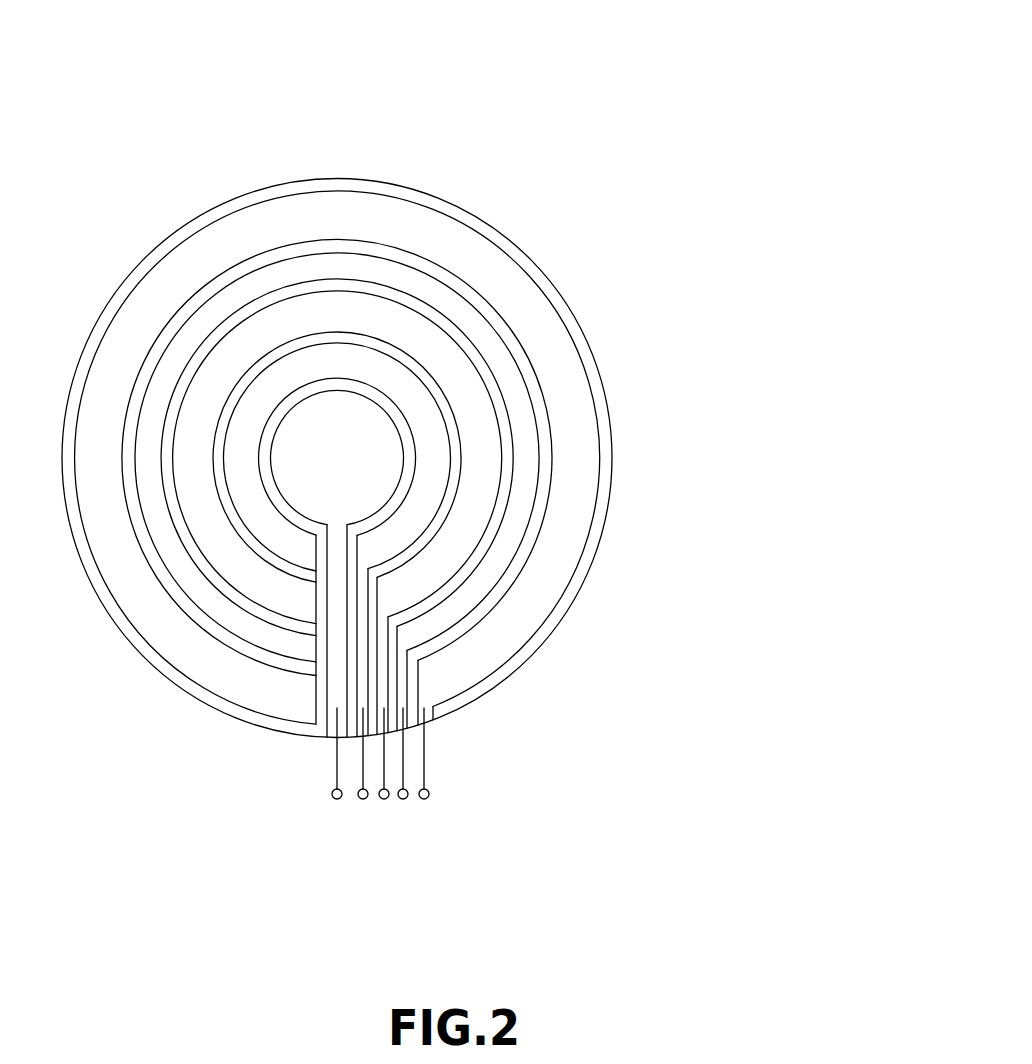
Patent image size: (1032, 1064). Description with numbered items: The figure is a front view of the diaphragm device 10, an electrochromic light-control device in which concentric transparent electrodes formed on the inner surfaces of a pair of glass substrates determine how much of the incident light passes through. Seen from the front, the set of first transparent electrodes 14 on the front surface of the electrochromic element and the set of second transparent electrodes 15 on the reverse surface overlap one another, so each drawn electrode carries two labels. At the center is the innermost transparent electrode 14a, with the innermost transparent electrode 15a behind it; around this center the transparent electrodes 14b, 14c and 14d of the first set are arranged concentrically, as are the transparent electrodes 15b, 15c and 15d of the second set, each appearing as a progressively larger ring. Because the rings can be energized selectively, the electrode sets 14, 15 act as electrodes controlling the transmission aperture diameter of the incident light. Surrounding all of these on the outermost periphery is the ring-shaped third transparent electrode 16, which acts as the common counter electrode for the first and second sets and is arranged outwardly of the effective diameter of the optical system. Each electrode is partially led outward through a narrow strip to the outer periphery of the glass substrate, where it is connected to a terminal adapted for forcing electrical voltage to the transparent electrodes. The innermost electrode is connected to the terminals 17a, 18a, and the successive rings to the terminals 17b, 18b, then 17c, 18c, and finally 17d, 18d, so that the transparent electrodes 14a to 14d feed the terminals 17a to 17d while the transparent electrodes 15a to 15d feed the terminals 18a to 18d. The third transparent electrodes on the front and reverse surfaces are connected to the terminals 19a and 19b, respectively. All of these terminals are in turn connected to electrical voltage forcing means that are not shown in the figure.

The diaphragm device 10 is at (505, 132).
The set of first transparent electrodes 14 is at (520, 442).
The set of second transparent electrodes 15 is at (782, 455).
The innermost transparent electrode 14a is at (512, 374).
The innermost transparent electrode 15a is at (352, 437).
The transparent electrode 14b is at (493, 428).
The transparent electrode 15b is at (423, 437).
The transparent electrode 14c is at (473, 457).
The transparent electrode 15c is at (473, 465).
The transparent electrode 14d is at (454, 457).
The transparent electrode 15d is at (520, 498).
The third transparent electrode 16 is at (533, 585).
The terminal 17a is at (259, 718).
The terminal 18a is at (332, 798).
The terminal 17b is at (316, 723).
The terminal 18b is at (360, 799).
The terminal 17c is at (377, 744).
The terminal 18c is at (384, 799).
The terminal 17d is at (448, 769).
The terminal 18d is at (406, 799).
The terminal 19a is at (507, 786).
The terminal 19b is at (428, 798).